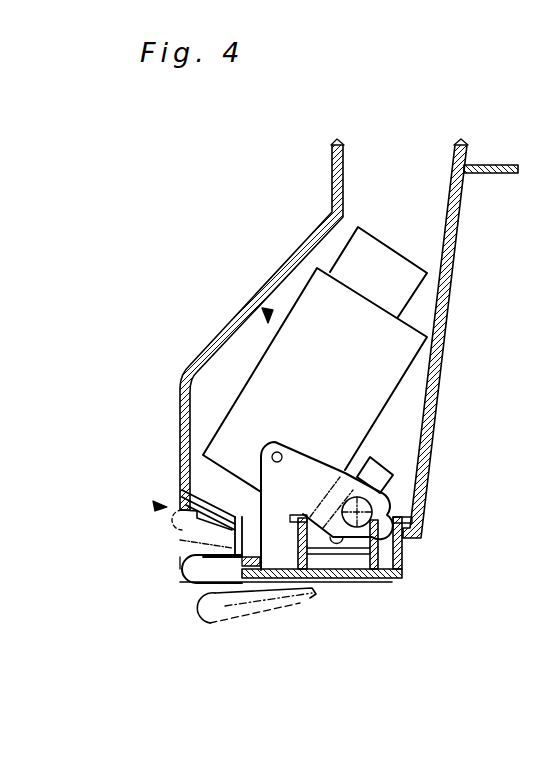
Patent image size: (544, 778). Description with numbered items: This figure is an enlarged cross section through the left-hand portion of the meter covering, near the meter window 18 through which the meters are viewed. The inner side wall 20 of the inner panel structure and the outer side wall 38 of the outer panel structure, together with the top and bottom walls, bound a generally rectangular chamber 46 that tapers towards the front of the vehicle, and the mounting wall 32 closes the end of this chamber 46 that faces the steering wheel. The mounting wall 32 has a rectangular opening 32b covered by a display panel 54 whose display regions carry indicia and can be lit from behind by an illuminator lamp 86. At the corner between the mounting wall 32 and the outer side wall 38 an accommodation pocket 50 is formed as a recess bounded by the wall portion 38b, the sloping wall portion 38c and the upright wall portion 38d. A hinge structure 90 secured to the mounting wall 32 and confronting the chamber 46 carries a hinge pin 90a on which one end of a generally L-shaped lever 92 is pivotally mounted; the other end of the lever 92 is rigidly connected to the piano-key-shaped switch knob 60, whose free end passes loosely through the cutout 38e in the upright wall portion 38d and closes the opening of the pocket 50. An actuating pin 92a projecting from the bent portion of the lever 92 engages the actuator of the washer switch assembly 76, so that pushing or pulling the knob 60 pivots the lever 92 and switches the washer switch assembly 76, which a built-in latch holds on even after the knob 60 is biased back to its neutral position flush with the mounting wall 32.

The meter window 18 is at (490, 163).
The inner side wall 20 is at (443, 347).
The mounting wall 32 is at (394, 578).
The rectangular opening 32b is at (347, 580).
The outer side wall 38 is at (237, 318).
The wall portion 38b is at (180, 550).
The sloping wall portion 38c is at (200, 520).
The upright wall portion 38d is at (203, 497).
The cutout 38e is at (180, 532).
The chamber 46 is at (268, 318).
The accommodation pocket 50 is at (160, 506).
The display panel 54 is at (325, 580).
The switch knob 60 is at (183, 582).
The washer switch assembly 76 is at (313, 308).
The illuminator lamp 86 is at (378, 470).
The hinge structure 90 is at (403, 548).
The hinge pin 90a is at (382, 494).
The L-shaped lever 92 is at (275, 480).
The actuating pin 92a is at (273, 440).